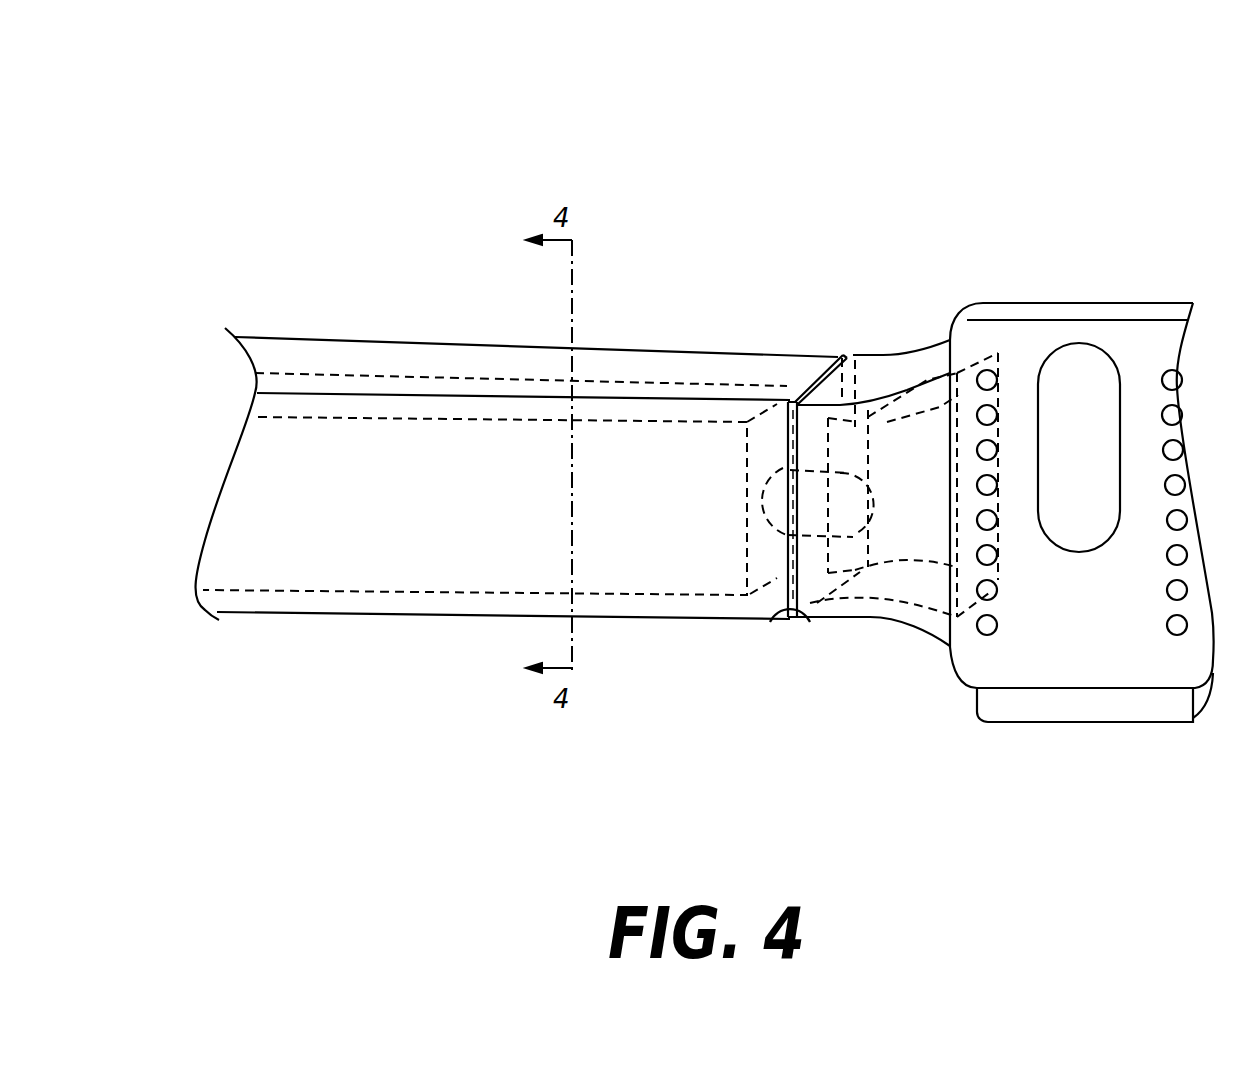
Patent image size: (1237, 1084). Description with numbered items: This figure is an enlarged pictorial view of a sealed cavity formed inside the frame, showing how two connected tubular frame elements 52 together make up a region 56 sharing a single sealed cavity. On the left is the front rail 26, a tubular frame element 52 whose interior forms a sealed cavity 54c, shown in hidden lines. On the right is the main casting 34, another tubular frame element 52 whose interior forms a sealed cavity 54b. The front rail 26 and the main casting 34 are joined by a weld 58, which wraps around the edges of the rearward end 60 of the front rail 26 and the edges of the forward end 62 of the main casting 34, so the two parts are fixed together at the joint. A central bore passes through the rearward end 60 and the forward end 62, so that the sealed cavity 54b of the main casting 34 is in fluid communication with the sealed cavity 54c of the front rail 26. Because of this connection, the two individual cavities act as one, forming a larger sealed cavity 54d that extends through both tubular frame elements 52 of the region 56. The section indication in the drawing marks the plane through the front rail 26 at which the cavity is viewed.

The front rail 26 is at (420, 394).
The main casting 34 is at (1100, 317).
The tubular frame element 52 is at (705, 478).
The sealed cavity 54b is at (937, 337).
The sealed cavity 54c is at (317, 417).
The larger sealed cavity 54d is at (622, 380).
The region 56 is at (836, 360).
The weld 58 is at (790, 394).
The rearward end 60 is at (808, 388).
The forward end 62 is at (853, 356).